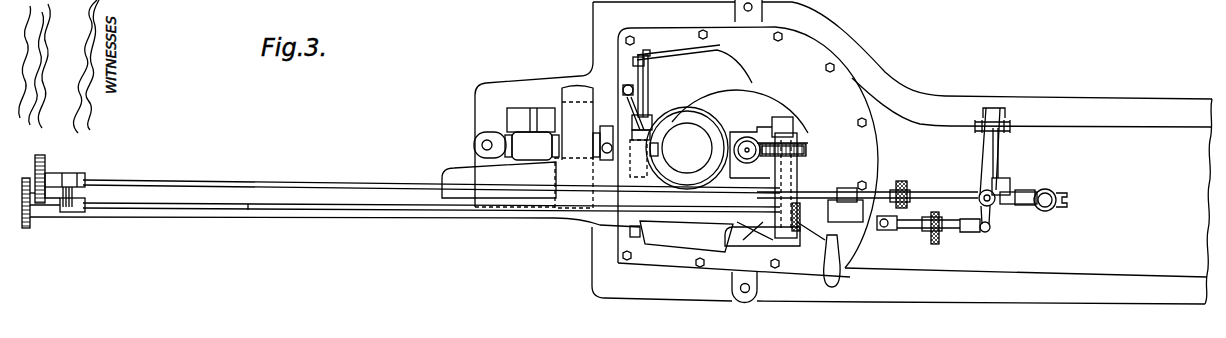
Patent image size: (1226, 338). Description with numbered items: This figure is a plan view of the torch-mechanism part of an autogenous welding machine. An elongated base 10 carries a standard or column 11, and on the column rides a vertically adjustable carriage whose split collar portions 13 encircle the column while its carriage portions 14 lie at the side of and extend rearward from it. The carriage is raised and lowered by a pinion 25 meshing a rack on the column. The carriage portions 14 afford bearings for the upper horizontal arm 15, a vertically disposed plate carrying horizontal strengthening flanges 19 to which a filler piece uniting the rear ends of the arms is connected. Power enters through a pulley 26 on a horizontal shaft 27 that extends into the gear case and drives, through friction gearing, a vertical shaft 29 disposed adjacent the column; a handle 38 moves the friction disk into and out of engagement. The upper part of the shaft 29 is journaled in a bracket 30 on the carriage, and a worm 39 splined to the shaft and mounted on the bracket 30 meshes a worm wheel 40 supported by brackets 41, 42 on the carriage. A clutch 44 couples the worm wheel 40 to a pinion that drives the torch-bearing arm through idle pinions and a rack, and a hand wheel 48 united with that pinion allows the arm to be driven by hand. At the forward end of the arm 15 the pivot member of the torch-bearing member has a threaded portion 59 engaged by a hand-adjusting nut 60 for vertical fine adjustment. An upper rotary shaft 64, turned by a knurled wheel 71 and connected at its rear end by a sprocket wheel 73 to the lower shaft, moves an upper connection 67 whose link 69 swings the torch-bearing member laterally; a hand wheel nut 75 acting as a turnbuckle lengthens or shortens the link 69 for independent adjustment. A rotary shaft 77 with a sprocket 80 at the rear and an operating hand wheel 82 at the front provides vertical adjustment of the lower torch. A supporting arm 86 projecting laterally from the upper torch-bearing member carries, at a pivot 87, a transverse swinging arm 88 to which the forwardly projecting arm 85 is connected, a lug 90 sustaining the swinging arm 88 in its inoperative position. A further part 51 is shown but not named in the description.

The elongated base 10 is at (1028, 200).
The standard or column 11 is at (687, 148).
The collar portions 13 is at (684, 113).
The carriage portions 14 is at (455, 168).
The upper horizontal arm 15 is at (368, 220).
The horizontal strengthening flanges 19 is at (167, 213).
The pinion 25 is at (648, 117).
The pulley 26 is at (570, 88).
The horizontal shaft 27 is at (553, 150).
The vertical shaft 29 is at (750, 172).
The bracket 30 is at (750, 130).
The handle 38 is at (584, 167).
The worm 39 is at (750, 142).
The worm wheel 40 is at (808, 150).
The bracket 41 is at (792, 128).
The bracket 42 is at (798, 185).
The clutch 44 is at (800, 141).
The hand wheel 48 is at (760, 239).
The fork connector 51 is at (1050, 191).
The threaded portion 59 is at (992, 210).
The hand-adjusting nut 60 is at (972, 190).
The upper rotary shaft 64 is at (248, 211).
The upper connection 67 is at (862, 223).
The link 69 is at (912, 230).
The knurled wheel 71 is at (817, 261).
The sprocket wheel 73 is at (22, 216).
The hand wheel nut 75 is at (936, 240).
The rotary shaft 77 is at (268, 184).
The sprocket 80 is at (45, 168).
The operating hand wheel 82 is at (903, 178).
The forwardly projecting arm 85 is at (1048, 177).
The supporting arm 86 is at (982, 155).
The pivot 87 is at (1011, 129).
The swinging arm 88 is at (1001, 158).
The lug 90 is at (1012, 109).